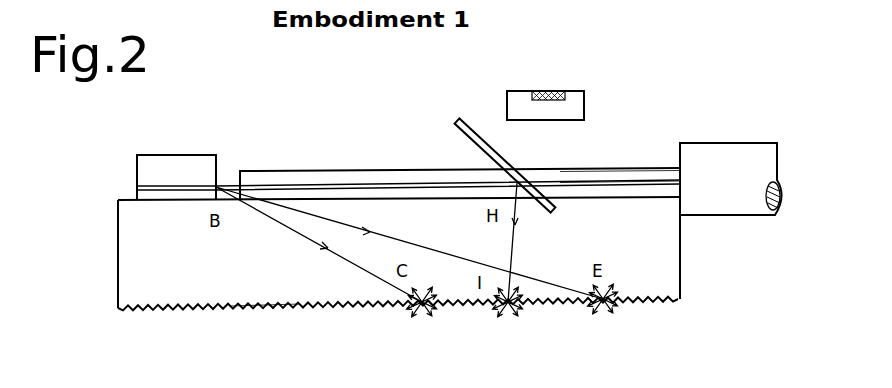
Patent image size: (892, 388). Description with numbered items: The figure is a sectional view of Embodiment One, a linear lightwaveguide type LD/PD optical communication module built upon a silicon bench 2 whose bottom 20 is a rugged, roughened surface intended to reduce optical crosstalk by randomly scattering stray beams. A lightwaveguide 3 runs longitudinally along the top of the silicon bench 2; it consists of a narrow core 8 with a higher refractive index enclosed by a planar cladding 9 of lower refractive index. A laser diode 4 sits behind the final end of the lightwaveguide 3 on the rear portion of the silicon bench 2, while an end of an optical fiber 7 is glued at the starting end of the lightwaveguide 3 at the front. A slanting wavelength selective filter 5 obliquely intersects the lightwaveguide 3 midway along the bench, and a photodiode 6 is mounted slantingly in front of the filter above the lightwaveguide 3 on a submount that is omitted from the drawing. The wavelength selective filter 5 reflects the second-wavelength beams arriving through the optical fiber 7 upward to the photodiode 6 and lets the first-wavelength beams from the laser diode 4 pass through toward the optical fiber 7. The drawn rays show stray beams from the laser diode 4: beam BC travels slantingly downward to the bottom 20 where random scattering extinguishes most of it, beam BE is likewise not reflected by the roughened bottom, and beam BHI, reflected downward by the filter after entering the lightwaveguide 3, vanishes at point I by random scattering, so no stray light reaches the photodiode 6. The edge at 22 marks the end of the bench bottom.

The silicon bench 2 is at (130, 250).
The lightwaveguide 3 is at (310, 183).
The laser diode 4 is at (195, 168).
The wavelength selective filter 5 is at (483, 133).
The photodiode 6 is at (575, 102).
The optical fiber 7 is at (728, 178).
The core 8 is at (655, 182).
The cladding 9 is at (615, 173).
The bottom 20 is at (258, 312).
The end edge of substrate 22 is at (680, 298).